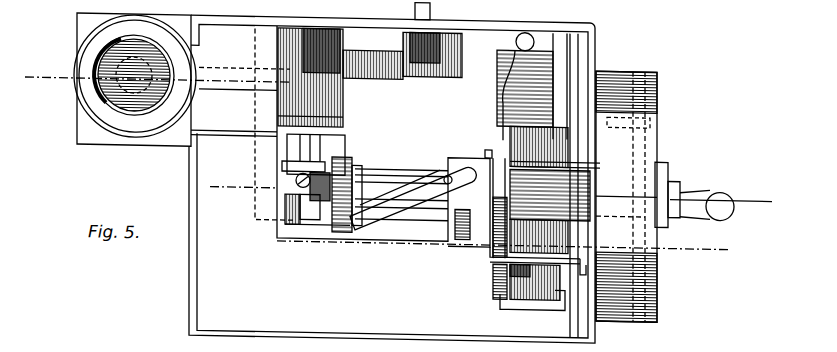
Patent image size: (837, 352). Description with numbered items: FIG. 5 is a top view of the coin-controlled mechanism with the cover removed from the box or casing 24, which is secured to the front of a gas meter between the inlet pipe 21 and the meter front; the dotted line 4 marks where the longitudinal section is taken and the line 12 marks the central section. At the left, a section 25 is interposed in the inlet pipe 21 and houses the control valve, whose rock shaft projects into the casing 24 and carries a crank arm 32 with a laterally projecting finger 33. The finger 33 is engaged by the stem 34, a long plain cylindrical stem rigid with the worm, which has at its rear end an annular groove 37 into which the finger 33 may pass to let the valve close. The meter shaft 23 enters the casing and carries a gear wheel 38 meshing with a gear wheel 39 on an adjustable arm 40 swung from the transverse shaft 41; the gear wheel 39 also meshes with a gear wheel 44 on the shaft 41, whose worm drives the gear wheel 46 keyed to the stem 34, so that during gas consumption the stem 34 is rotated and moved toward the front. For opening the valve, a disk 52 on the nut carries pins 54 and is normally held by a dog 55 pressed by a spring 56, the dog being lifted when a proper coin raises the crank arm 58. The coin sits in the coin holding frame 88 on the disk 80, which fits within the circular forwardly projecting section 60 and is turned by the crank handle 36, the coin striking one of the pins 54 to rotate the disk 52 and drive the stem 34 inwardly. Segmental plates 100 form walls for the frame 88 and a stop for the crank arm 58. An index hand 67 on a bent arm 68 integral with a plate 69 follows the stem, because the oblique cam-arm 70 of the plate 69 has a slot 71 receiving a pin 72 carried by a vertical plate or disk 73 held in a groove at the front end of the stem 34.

The dotted line 4- 4 is at (386, 161).
The section line 12- 12 is at (493, 186).
The inlet pipe 21 is at (100, 95).
The meter operating-rod or shaft 23 is at (431, 5).
The box or casing 24 is at (402, 329).
The section 25 is at (80, 129).
The crank arm 32 is at (283, 165).
The arm or finger 33 is at (300, 213).
The stem 34 is at (387, 160).
The crank handle 36 is at (694, 195).
The annular groove 37 is at (312, 213).
The gear wheel 38 is at (462, 57).
The gear wheel 39 is at (385, 73).
The arm 40 is at (360, 42).
The shaft 41 is at (345, 112).
The gear wheel 44 is at (343, 93).
The gear wheel 46 is at (340, 230).
The disk 52 is at (498, 284).
The pins 54 is at (555, 191).
The dog 55 is at (497, 178).
The spring 56 is at (505, 82).
The crank arm 58 is at (555, 58).
The circular forwardly projecting section 60 is at (637, 287).
The index hand 67 is at (598, 240).
The bent arm 68 is at (490, 262).
The plate 69 is at (489, 142).
The cam-arm 70 is at (392, 232).
The slot 71 is at (415, 176).
The pin 72 is at (448, 166).
The vertical plate or disk 73 is at (462, 225).
The disk 80 is at (640, 146).
The coin holding frame 88 is at (535, 284).
The segmental plates 100 is at (540, 303).